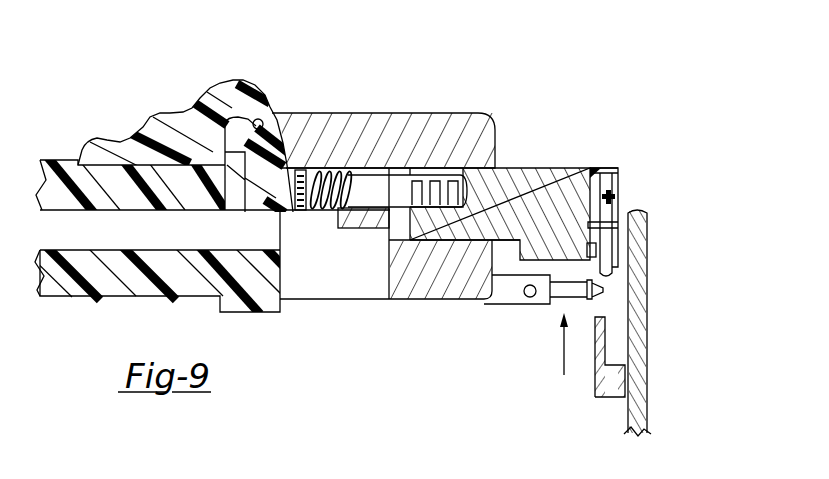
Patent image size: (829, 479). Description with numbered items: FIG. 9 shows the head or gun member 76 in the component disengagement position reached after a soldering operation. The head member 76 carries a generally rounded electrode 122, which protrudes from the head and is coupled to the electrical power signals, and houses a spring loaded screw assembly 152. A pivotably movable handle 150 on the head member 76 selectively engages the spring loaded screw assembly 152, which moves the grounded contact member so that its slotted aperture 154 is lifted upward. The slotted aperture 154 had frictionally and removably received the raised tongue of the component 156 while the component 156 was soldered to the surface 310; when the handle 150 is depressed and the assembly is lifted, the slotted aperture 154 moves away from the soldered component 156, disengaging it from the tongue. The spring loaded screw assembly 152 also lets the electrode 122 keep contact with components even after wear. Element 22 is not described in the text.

The handle 150 is at (233, 103).
The head member 76 is at (563, 129).
The spring loaded screw assembly 152 is at (322, 210).
The slotted aperture 154 is at (605, 274).
The electrode 122 is at (555, 293).
The surface 310 is at (640, 390).
The component 156 is at (560, 397).
The frame bracket 22 is at (599, 398).